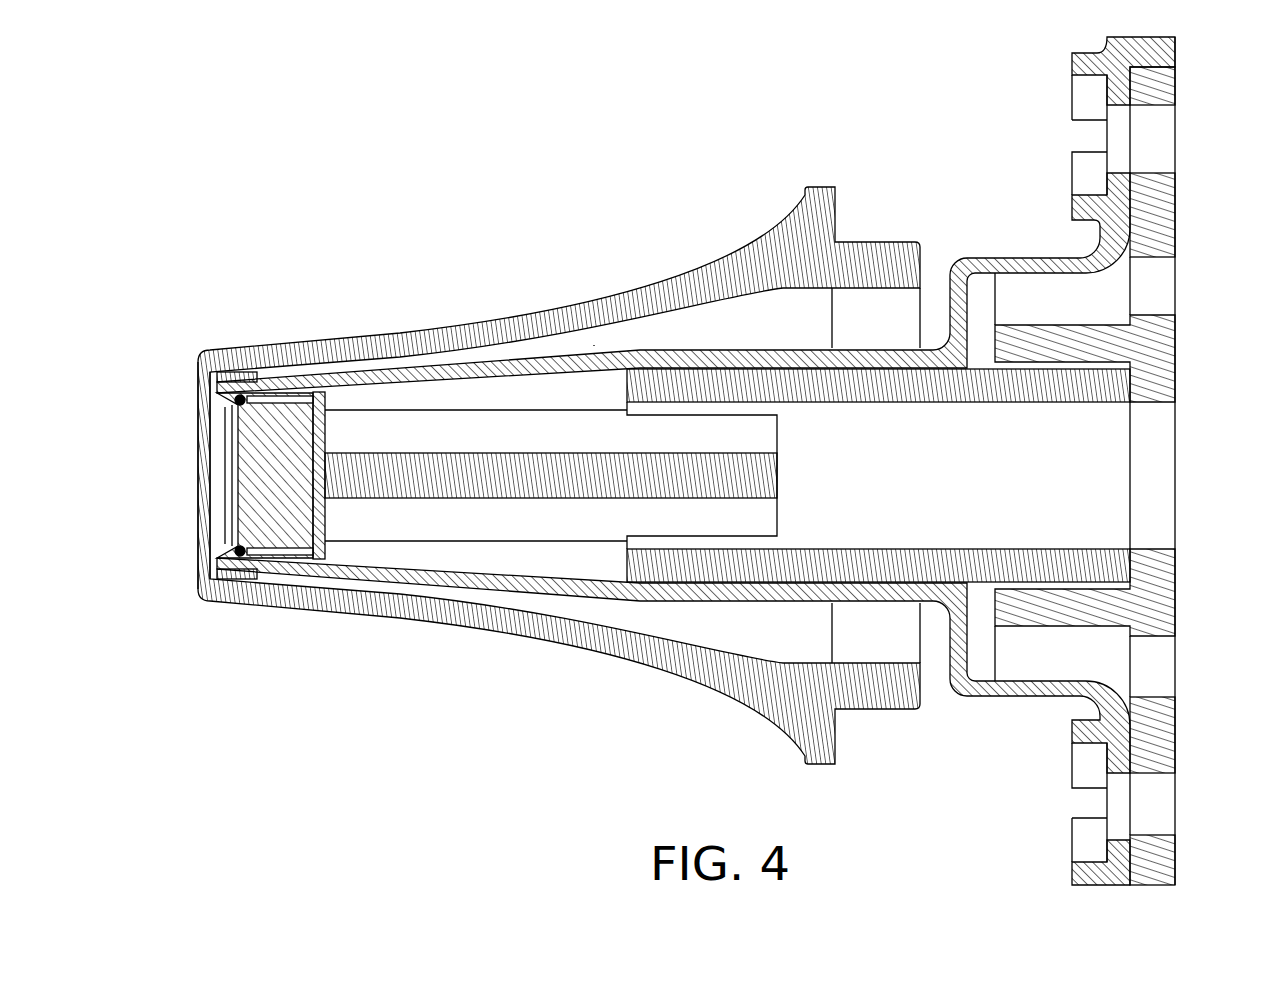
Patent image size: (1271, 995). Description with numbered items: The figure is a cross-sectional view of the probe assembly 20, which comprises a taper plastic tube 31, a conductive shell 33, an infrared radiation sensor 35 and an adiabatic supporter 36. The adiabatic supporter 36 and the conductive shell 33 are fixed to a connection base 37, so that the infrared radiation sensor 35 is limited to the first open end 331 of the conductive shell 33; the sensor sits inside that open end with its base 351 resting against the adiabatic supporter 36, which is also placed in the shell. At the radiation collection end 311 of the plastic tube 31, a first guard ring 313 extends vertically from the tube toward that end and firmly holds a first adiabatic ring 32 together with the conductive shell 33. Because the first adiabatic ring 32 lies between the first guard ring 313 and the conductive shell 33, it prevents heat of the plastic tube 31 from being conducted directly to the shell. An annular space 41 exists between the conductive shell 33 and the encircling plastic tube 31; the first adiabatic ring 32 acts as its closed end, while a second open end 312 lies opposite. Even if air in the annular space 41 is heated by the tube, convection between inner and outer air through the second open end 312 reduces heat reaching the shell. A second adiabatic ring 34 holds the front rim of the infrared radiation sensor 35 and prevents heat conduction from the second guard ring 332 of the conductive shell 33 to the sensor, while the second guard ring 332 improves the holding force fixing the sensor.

The probe assembly 20 is at (338, 152).
The taper plastic tube 31 is at (470, 333).
The radiation collection end 311 is at (190, 398).
The second open end 312 is at (926, 262).
The first guard ring 313 is at (222, 377).
The first adiabatic ring 32 is at (257, 390).
The conductive shell 33 is at (540, 368).
The second adiabatic ring 34 is at (238, 396).
The infrared radiation sensor 35 is at (290, 432).
The base 351 is at (330, 435).
The adiabatic supporter 36 is at (686, 385).
The connection base 37 is at (1175, 353).
The annular space 41 is at (594, 345).
The first open end 331 is at (207, 537).
The second guard ring 332 is at (211, 409).